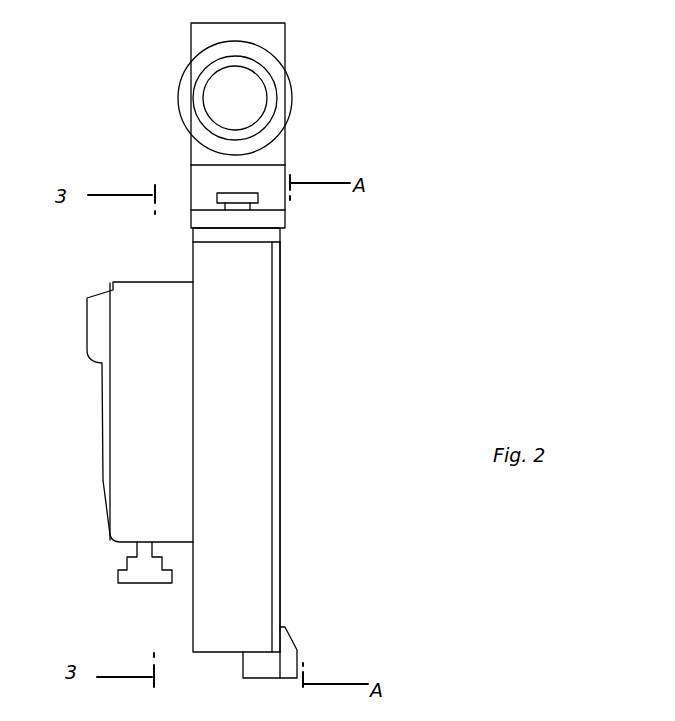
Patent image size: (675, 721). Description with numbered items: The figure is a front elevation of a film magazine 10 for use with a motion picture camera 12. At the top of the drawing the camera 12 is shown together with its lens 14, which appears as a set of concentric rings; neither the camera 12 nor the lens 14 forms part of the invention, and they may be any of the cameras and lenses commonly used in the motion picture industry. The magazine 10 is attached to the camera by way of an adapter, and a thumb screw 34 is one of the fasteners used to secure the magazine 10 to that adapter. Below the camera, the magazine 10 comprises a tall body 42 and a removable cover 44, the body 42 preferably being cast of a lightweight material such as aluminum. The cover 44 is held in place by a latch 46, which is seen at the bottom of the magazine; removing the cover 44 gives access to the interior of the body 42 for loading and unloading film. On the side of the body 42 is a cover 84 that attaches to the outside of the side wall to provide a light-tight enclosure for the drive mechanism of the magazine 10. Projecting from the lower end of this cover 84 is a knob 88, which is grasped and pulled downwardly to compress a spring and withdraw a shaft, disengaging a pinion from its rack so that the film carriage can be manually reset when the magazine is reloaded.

The film magazine 10 is at (193, 265).
The motion picture camera 12 is at (285, 33).
The lens 14 is at (292, 92).
The thumb screw 34 is at (219, 197).
The body 42 is at (252, 375).
The removable cover 44 is at (282, 432).
The latch 46 is at (263, 662).
The cover 84 is at (103, 405).
The knob 88 is at (120, 577).